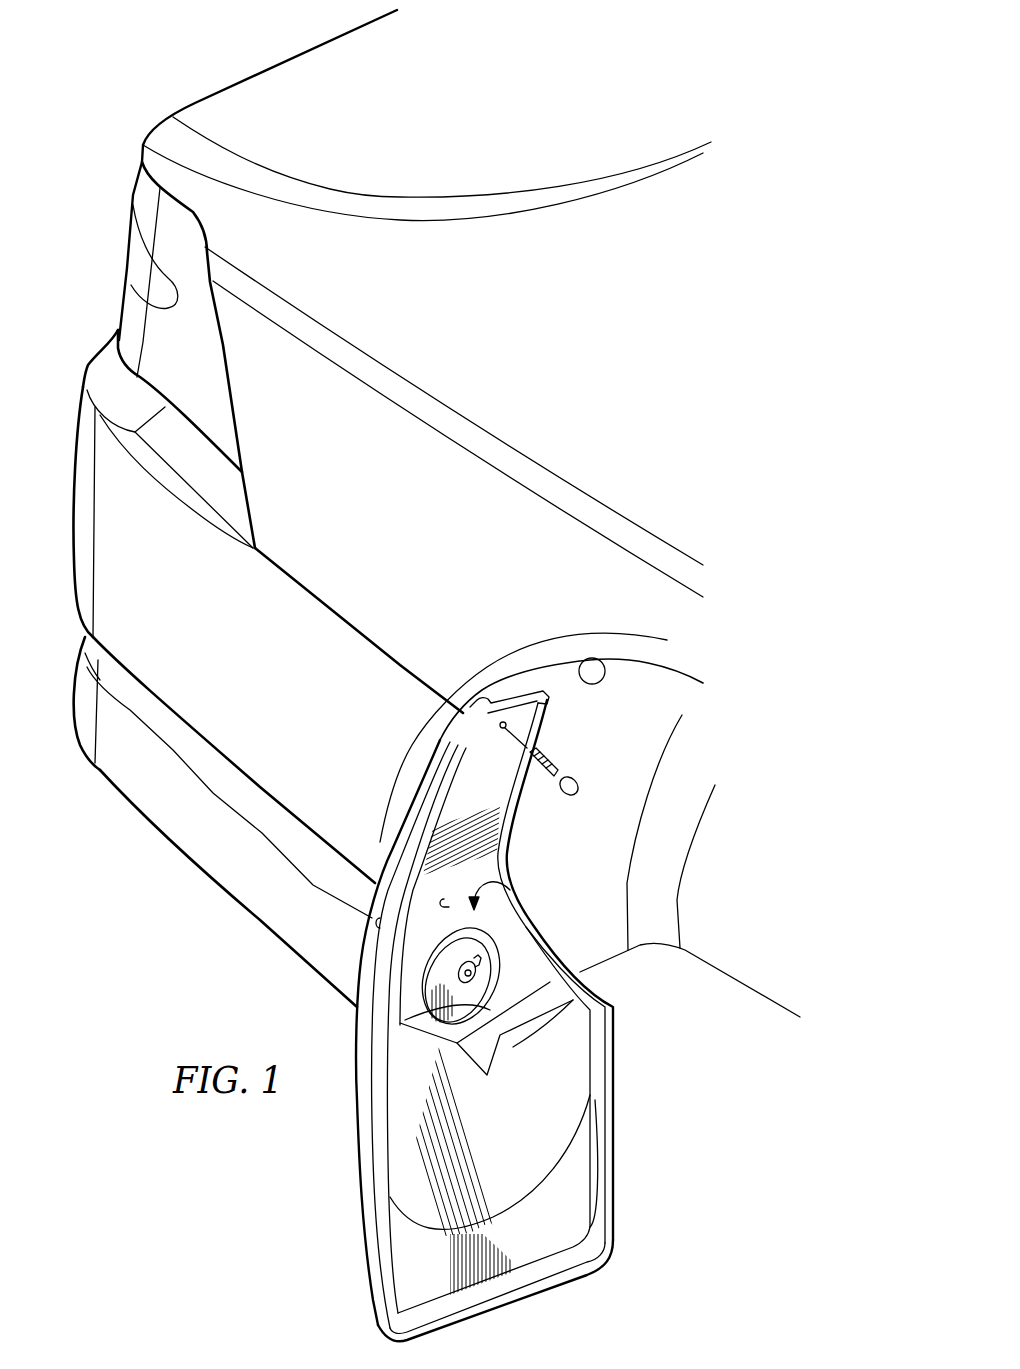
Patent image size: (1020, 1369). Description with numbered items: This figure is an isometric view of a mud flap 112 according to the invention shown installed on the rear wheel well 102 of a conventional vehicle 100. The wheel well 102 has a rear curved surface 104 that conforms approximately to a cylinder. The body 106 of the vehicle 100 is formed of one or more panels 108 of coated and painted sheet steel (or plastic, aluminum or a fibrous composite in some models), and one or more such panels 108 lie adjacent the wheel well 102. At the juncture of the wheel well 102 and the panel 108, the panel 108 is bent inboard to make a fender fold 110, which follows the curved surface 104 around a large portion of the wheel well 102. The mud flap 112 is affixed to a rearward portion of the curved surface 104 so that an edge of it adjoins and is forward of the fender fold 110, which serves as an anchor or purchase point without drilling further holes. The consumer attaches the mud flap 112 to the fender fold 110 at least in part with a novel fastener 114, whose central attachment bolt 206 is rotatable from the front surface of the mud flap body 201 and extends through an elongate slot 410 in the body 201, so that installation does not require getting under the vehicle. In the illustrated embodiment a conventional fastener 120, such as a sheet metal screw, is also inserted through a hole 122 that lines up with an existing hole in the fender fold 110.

The vehicle 100 is at (468, 329).
The wheel well 102 is at (749, 919).
The curved surface 104 is at (595, 852).
The body 106 is at (387, 525).
The panel 108 is at (317, 704).
The fender fold 110 is at (606, 663).
The mud flap 112 is at (527, 1144).
The fastener 114 is at (510, 890).
The conventional fastener 120 is at (576, 786).
The hole 122 is at (507, 724).
The mud flap body 201 is at (570, 1191).
The central attachment bolt 206 is at (478, 983).
The elongate slot 410 is at (487, 967).